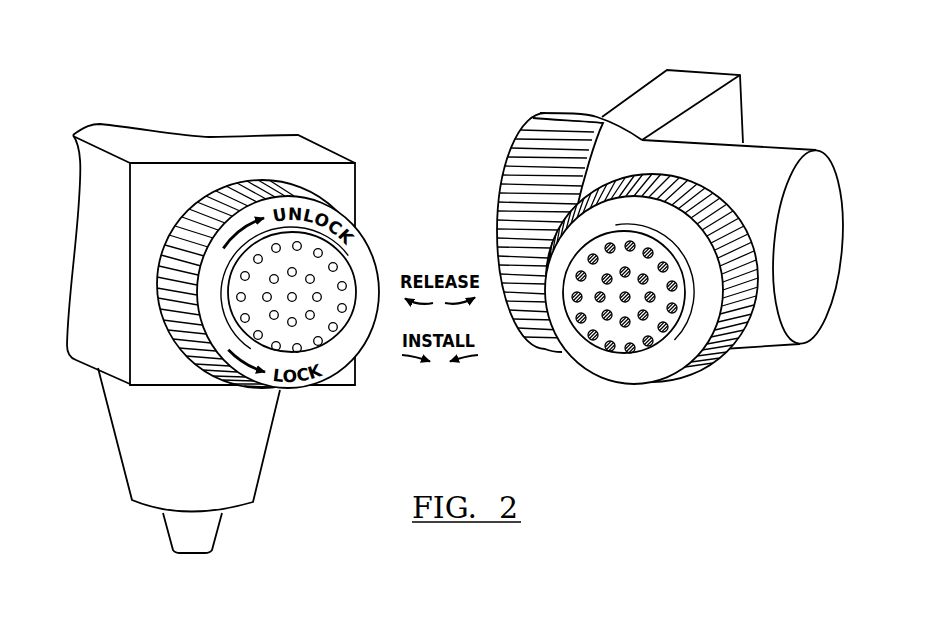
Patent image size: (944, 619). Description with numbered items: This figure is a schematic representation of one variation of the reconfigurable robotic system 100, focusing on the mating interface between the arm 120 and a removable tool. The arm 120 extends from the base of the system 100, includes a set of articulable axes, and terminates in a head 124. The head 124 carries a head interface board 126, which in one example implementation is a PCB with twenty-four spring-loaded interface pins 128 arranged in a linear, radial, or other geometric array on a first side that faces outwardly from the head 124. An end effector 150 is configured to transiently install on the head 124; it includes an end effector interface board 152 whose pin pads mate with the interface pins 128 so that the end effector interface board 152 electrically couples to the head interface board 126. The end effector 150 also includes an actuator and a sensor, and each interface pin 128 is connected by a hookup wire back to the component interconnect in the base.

The reconfigurable robotic system 100 is at (683, 225).
The arm 120 is at (673, 260).
The head 124 is at (807, 315).
The head interface board 126 is at (627, 337).
The interface pins 128 is at (605, 348).
The end effector 150 is at (232, 459).
The end effector interface board 152 is at (343, 267).